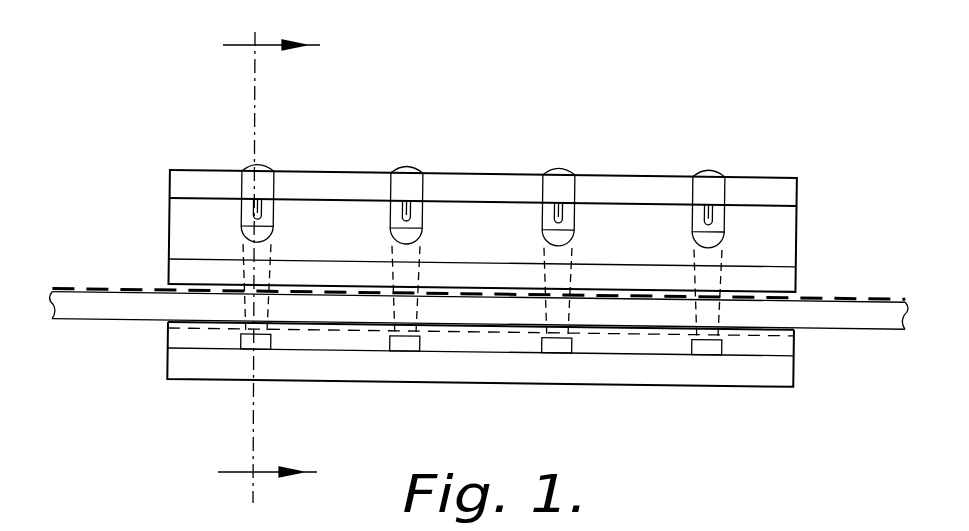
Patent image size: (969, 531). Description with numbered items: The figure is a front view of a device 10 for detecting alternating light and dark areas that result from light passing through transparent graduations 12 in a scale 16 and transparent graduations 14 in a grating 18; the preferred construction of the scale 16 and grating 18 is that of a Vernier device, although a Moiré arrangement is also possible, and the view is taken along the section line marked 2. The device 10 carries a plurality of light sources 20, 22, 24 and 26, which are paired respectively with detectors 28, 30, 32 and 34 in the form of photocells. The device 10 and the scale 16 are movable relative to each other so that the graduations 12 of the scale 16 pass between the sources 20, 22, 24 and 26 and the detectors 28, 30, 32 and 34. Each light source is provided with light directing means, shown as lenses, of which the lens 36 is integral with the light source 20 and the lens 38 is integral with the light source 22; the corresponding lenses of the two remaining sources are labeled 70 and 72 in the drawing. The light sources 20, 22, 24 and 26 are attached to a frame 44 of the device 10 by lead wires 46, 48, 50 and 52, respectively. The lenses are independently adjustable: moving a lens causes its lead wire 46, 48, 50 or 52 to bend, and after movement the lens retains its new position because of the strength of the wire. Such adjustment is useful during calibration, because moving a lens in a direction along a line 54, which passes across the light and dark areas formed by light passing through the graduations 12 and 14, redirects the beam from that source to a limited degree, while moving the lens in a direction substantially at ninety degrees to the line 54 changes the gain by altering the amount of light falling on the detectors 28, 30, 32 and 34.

The section line 2- 2 is at (269, 258).
The device 10 is at (772, 156).
The transparent graduations 12 is at (205, 290).
The transparent graduations 14 is at (252, 293).
The scale 16 is at (62, 314).
The grating 18 is at (334, 268).
The light source 20 is at (240, 212).
The light source 22 is at (390, 207).
The light source 24 is at (540, 208).
The light source 26 is at (690, 208).
The detector 28 is at (243, 345).
The detector 30 is at (415, 342).
The detector 32 is at (568, 342).
The detector 34 is at (718, 347).
The light directing means 36 is at (243, 236).
The light directing means 38 is at (421, 238).
The frame 44 is at (798, 188).
The lead wire 46 is at (274, 202).
The lead wire 48 is at (424, 204).
The lead wire 50 is at (575, 204).
The lead wire 52 is at (725, 204).
The line 54 is at (168, 328).
The tip of third pin 70 is at (574, 240).
The tip of fourth pin 72 is at (722, 240).